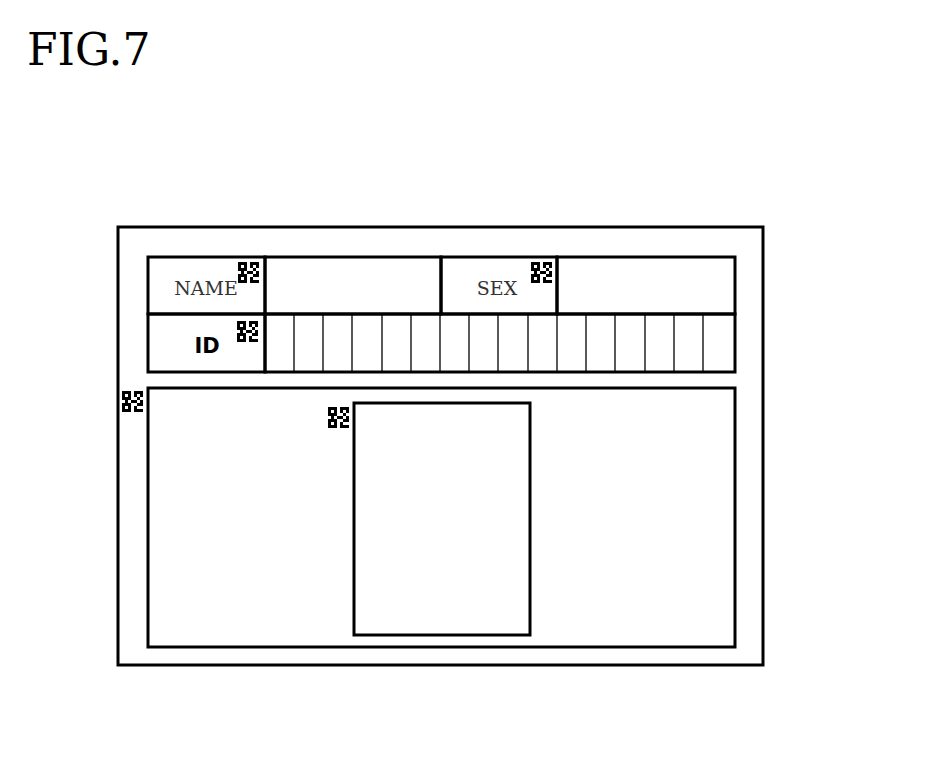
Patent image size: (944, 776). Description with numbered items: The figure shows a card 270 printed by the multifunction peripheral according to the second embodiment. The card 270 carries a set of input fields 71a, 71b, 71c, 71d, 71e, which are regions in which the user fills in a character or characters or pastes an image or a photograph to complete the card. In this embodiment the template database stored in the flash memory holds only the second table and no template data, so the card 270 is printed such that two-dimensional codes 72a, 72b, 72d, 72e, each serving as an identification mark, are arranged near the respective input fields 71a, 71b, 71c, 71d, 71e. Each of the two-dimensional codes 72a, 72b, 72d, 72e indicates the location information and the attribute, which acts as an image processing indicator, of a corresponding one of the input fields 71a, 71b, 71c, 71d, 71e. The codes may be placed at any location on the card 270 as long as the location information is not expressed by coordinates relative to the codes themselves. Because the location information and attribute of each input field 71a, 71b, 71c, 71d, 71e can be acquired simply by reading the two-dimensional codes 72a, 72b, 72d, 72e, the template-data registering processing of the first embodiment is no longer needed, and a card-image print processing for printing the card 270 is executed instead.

The card 270 is at (207, 227).
The input field 71a is at (352, 258).
The input field 71b is at (657, 258).
The input field 71c is at (735, 340).
The input field 71d is at (286, 648).
The input field 71e is at (530, 458).
The two-dimensional code 72a is at (247, 258).
The two-dimensional code 72b is at (542, 258).
The two-dimensional code 72d is at (130, 412).
The two-dimensional code 72e is at (255, 343).